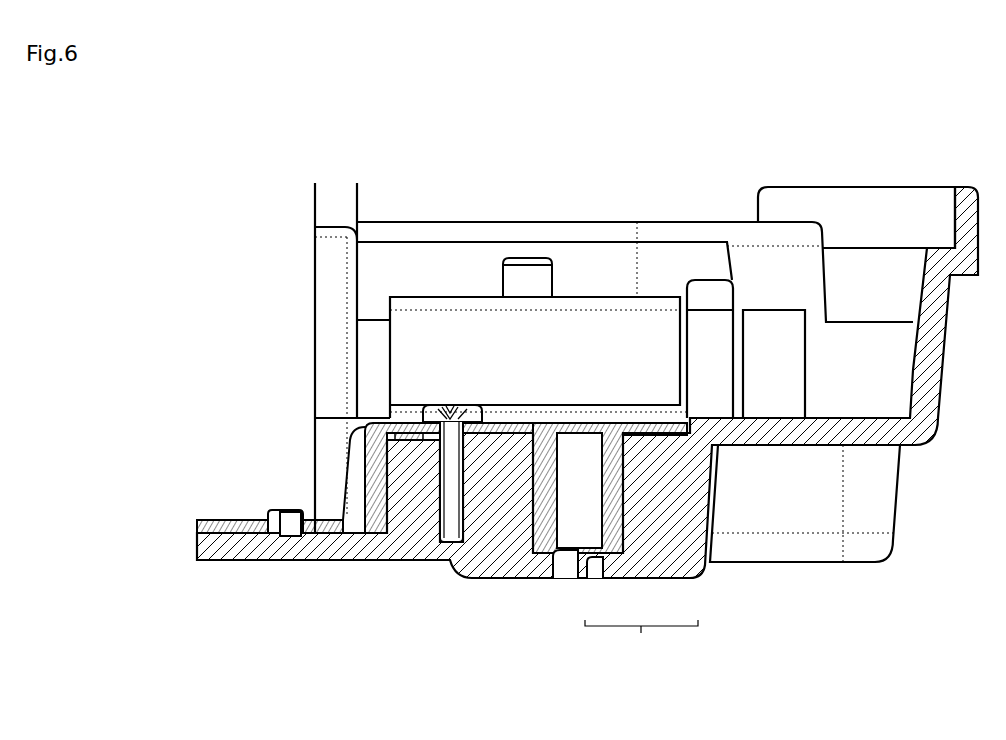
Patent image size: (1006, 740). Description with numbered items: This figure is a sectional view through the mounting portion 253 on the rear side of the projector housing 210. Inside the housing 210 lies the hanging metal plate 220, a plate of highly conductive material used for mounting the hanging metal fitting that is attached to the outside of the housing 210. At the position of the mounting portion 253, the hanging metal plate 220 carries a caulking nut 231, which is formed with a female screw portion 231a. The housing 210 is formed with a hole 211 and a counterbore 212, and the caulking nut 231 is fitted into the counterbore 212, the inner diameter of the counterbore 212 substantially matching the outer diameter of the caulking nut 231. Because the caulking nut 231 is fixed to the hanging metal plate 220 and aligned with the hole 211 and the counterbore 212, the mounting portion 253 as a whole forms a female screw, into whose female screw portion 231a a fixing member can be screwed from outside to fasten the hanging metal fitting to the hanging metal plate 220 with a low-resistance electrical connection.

The housing 210 is at (472, 580).
The hanging metal plate 220 is at (518, 423).
The caulking nut 231 is at (566, 521).
The female screw portion 231a is at (590, 462).
The hole 211 is at (598, 578).
The counterbore 212 is at (593, 523).
The mounting portion 253 is at (641, 636).